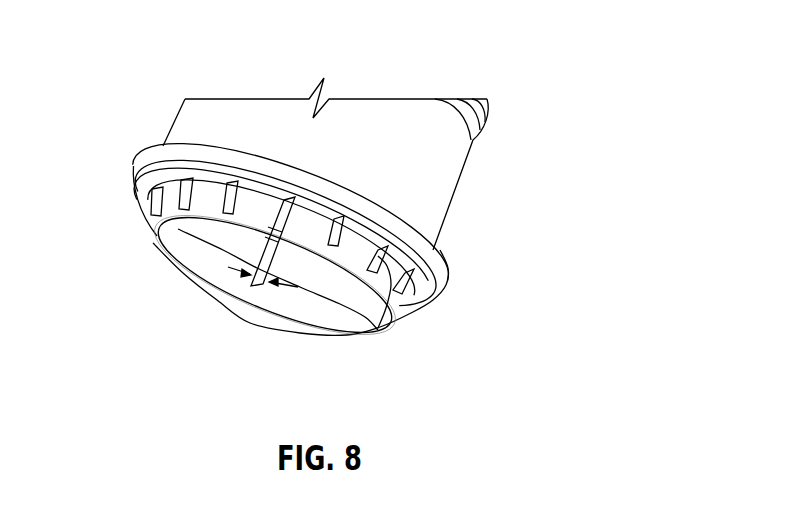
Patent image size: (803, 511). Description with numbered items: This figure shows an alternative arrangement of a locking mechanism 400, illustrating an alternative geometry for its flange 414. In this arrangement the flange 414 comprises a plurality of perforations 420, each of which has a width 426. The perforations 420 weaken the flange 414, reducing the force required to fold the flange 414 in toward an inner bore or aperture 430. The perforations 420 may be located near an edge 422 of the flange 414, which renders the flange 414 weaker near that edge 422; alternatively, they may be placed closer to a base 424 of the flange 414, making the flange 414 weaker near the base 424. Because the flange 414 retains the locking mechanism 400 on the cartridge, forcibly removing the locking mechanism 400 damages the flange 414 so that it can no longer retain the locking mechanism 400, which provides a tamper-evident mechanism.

The locking mechanism 400 is at (540, 112).
The flange 414 is at (152, 221).
The perforations 420 is at (186, 179).
The edge 422 is at (341, 337).
The base 424 is at (446, 252).
The width 426 is at (228, 267).
The inner bore or aperture 430 is at (298, 287).